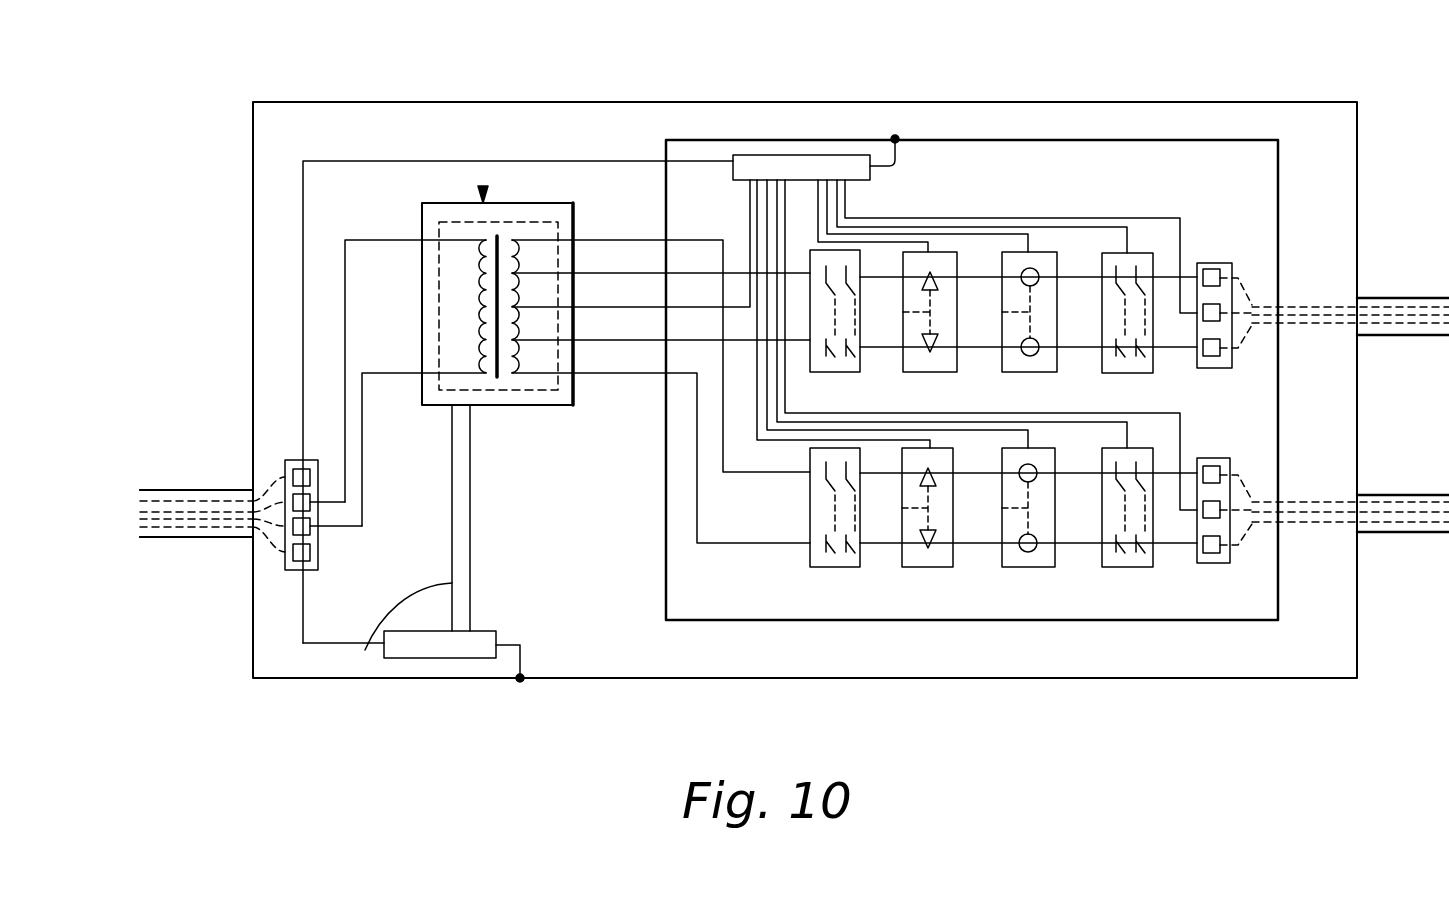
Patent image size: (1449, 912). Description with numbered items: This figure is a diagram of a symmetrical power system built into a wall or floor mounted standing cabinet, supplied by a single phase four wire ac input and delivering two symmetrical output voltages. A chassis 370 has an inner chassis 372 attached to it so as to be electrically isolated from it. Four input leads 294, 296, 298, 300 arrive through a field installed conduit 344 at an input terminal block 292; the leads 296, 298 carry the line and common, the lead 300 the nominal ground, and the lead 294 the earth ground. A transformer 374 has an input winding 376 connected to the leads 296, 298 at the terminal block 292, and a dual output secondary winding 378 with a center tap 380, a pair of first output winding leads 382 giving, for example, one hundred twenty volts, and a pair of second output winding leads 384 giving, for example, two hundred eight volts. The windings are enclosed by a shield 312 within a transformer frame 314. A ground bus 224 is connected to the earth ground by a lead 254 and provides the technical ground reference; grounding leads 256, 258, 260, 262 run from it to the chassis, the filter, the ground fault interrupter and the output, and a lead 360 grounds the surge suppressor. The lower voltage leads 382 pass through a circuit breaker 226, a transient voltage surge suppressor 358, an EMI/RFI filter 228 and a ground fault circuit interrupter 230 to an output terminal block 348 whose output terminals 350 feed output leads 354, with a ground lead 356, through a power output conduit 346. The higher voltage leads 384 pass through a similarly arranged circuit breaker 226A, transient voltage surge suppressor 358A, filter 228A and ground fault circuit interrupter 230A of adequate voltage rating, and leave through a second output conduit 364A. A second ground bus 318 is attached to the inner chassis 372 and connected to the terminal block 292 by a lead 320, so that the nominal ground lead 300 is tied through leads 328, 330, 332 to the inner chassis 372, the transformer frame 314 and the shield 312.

The chassis 370 is at (1325, 678).
The inner chassis 372 is at (1270, 620).
The lead 254 is at (303, 178).
The shield 312 is at (422, 222).
The transformer frame 314 is at (440, 253).
The input winding 376 is at (474, 238).
The transformer 374 is at (483, 188).
The dual output secondary winding 378 is at (517, 238).
The center tap 380 is at (600, 307).
The first output winding leads 382 is at (610, 272).
The second output winding leads 384 is at (633, 240).
The ground bus 224 is at (788, 155).
The grounding lead 256 is at (893, 134).
The lead 360 is at (860, 242).
The grounding lead 258 is at (985, 234).
The grounding lead 260 is at (1057, 227).
The grounding lead 262 is at (1143, 218).
The circuit breaker 226 is at (862, 260).
The transient voltage surge suppressor 358 is at (947, 254).
The EMI/RFI filter 228 is at (1052, 253).
The ground fault circuit interrupter breaker 230 is at (1143, 253).
The output terminal block 348 is at (1215, 263).
The output terminals 350 is at (1215, 458).
The output leads 354 is at (1245, 292).
The output lead 356 is at (1258, 310).
The power output conduit 346 is at (1372, 298).
The cable 364A is at (1368, 533).
The input terminal block 292 is at (297, 460).
The field installed conduit 344 is at (250, 488).
The input lead 294 is at (153, 490).
The input lead 296 is at (203, 512).
The input lead 298 is at (170, 515).
The input lead 300 is at (213, 530).
The second ground bus 318 is at (468, 659).
The lead 320 is at (330, 643).
The lead 330 is at (365, 650).
The lead 332 is at (470, 574).
The lead 328 is at (522, 655).
The circuit breaker 226A is at (838, 567).
The transient voltage surge suppressor 358A is at (930, 567).
The filter 228A is at (1028, 567).
The ground fault circuit interrupter 230A is at (1127, 567).